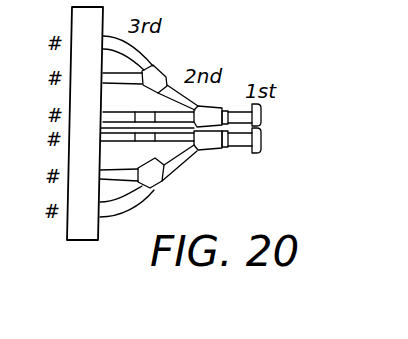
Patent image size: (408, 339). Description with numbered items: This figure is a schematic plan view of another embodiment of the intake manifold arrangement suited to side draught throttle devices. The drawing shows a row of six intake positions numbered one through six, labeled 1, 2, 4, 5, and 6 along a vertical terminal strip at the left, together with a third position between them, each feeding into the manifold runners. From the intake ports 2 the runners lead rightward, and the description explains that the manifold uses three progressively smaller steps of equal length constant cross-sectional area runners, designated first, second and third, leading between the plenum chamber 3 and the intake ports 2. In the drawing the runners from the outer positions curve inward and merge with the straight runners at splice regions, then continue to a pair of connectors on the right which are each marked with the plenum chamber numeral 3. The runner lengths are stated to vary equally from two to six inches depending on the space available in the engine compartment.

The plenum chamber 3 is at (212, 107).
The terminal pin 1 wire 1 is at (113, 207).
The intake ports 2 is at (105, 177).
The terminal pin 4 wire 4 is at (135, 115).
The terminal pin 5 wire 5 is at (109, 78).
The terminal pin 6 wire 6 is at (114, 49).